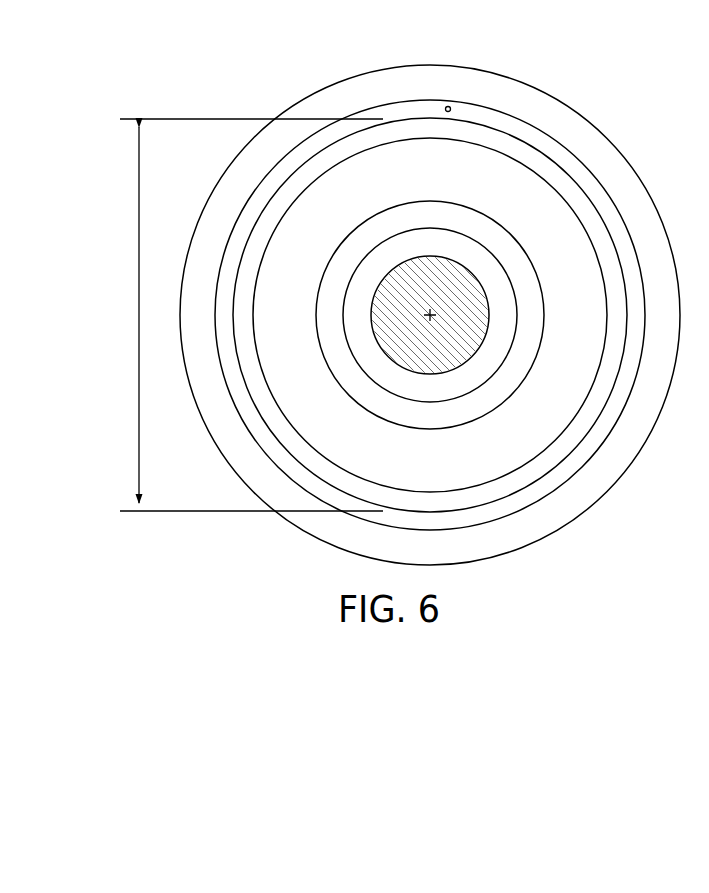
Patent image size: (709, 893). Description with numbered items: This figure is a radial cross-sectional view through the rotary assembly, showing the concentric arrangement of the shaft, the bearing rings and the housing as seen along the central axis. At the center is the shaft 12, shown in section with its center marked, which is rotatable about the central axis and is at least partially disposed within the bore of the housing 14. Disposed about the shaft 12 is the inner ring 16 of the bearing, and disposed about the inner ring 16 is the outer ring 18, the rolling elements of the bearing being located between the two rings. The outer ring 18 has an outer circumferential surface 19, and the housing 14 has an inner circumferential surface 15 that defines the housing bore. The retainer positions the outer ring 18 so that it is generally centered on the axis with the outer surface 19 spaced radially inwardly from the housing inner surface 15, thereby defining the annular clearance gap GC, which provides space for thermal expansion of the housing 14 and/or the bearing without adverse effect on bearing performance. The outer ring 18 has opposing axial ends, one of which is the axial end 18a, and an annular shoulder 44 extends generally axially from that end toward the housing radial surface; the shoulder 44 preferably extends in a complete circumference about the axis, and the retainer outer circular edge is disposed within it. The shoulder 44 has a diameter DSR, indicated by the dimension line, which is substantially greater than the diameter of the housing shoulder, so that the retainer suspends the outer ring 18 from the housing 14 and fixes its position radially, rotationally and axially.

The housing 14 is at (370, 65).
The inner circumferential surface 15 is at (267, 177).
The annular clearance gap GC is at (448, 106).
The outer circumferential surface 19 is at (500, 128).
The outer ring 18 is at (552, 158).
The annular shoulder 44 is at (575, 200).
The axial end 18a is at (573, 237).
The inner ring 16 is at (496, 325).
The shaft 12 is at (473, 307).
The outer ring shoulder diameter DSR is at (240, 315).